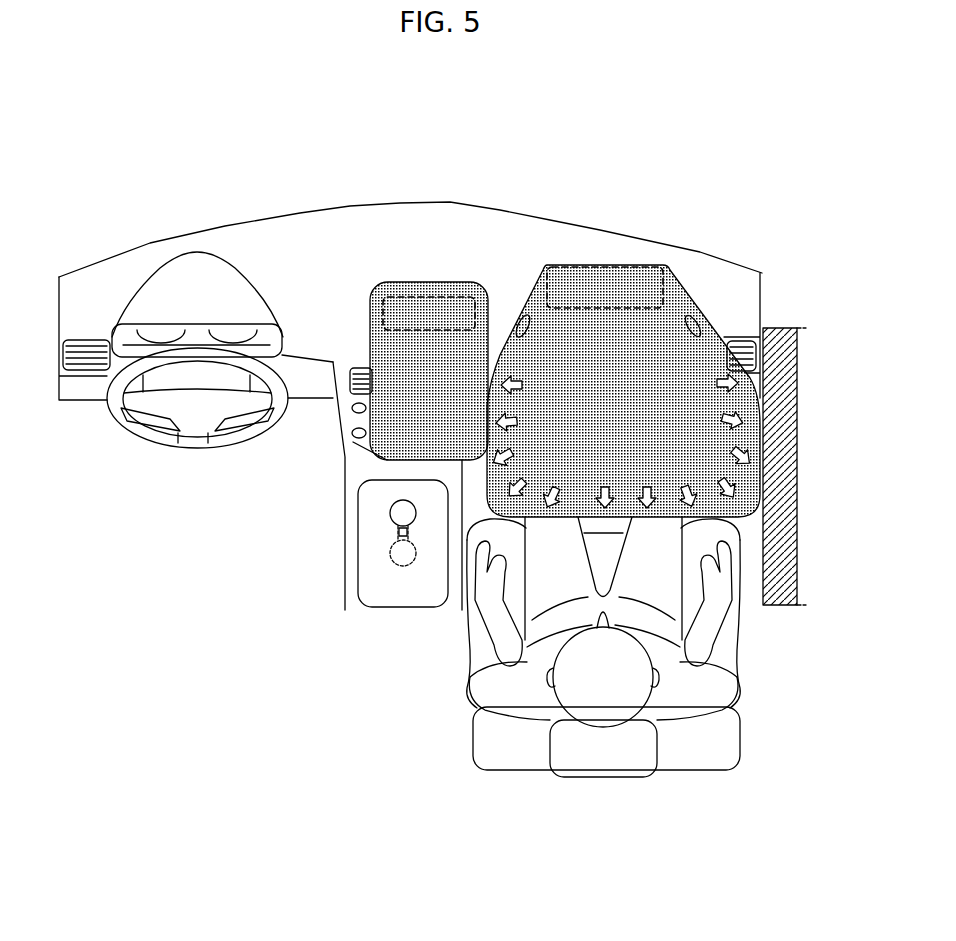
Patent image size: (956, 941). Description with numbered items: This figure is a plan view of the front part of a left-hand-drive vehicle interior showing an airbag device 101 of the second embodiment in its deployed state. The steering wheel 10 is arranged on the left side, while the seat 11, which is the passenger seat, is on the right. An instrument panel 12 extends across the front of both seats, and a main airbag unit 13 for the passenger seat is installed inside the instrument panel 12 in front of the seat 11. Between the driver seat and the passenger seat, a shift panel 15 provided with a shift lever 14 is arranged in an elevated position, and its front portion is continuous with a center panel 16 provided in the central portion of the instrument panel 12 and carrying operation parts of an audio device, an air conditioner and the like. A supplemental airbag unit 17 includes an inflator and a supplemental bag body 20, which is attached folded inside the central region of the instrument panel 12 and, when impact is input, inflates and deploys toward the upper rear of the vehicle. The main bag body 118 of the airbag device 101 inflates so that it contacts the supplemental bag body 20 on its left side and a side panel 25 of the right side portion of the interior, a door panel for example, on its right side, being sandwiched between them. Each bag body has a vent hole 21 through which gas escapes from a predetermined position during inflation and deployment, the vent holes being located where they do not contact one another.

The steering wheel 10 is at (150, 436).
The seat 11 is at (688, 750).
The instrument panel 12 is at (305, 245).
The main airbag unit 13 is at (650, 313).
The shift lever 14 is at (403, 515).
The shift panel 15 is at (365, 585).
The center panel 16 is at (337, 410).
The supplemental airbag unit 17 is at (428, 275).
The supplemental bag body 20 is at (492, 348).
The vent hole 21 is at (527, 314).
The side panel 25 is at (762, 570).
The airbag device 101 is at (612, 250).
The main bag body 118 is at (700, 368).